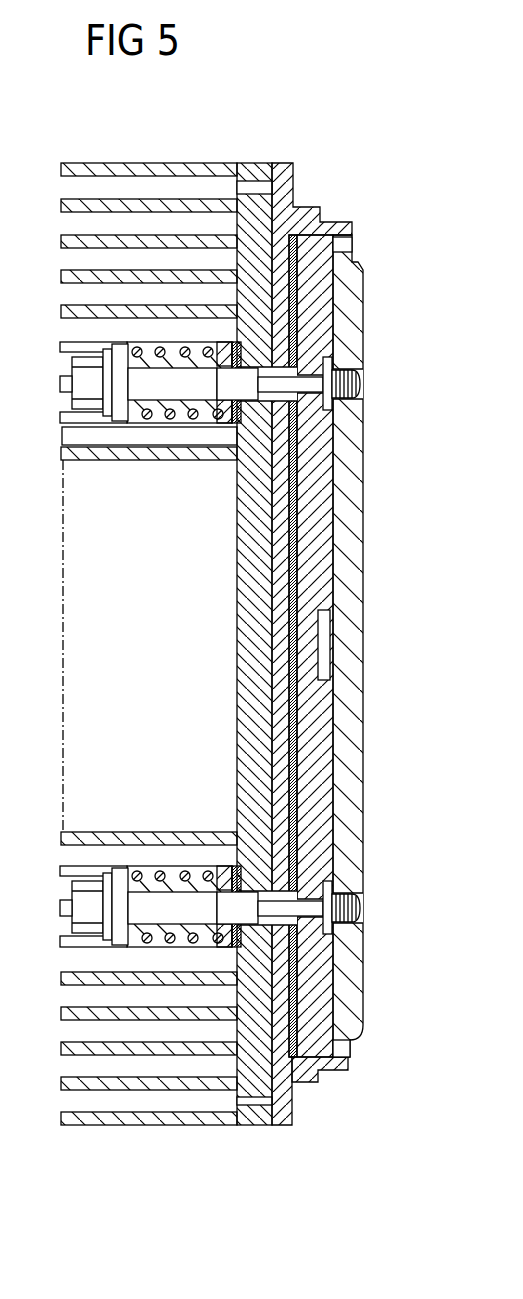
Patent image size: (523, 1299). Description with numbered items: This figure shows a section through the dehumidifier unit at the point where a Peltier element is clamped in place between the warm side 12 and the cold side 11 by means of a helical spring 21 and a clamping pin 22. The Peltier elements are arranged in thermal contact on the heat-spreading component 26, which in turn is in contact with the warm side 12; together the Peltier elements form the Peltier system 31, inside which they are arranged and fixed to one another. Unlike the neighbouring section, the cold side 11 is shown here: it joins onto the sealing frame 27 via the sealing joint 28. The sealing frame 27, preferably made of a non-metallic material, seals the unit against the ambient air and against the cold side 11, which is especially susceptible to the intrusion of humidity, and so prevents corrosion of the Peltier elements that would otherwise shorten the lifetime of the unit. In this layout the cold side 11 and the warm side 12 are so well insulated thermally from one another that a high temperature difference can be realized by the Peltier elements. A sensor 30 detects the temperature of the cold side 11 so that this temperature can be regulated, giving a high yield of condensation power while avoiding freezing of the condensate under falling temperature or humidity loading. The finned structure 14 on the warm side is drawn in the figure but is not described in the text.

The cold side 11 is at (353, 282).
The warm side 12 is at (242, 233).
The cooling fins 14 is at (72, 204).
The helical spring 21 is at (143, 428).
The clamping pin 22 is at (303, 384).
The heat-spreading component 26 is at (300, 740).
The sealing frame 27 is at (317, 1077).
The sealing joint 28 is at (340, 1047).
The sensor 30 is at (327, 648).
The Peltier system 31 is at (320, 327).